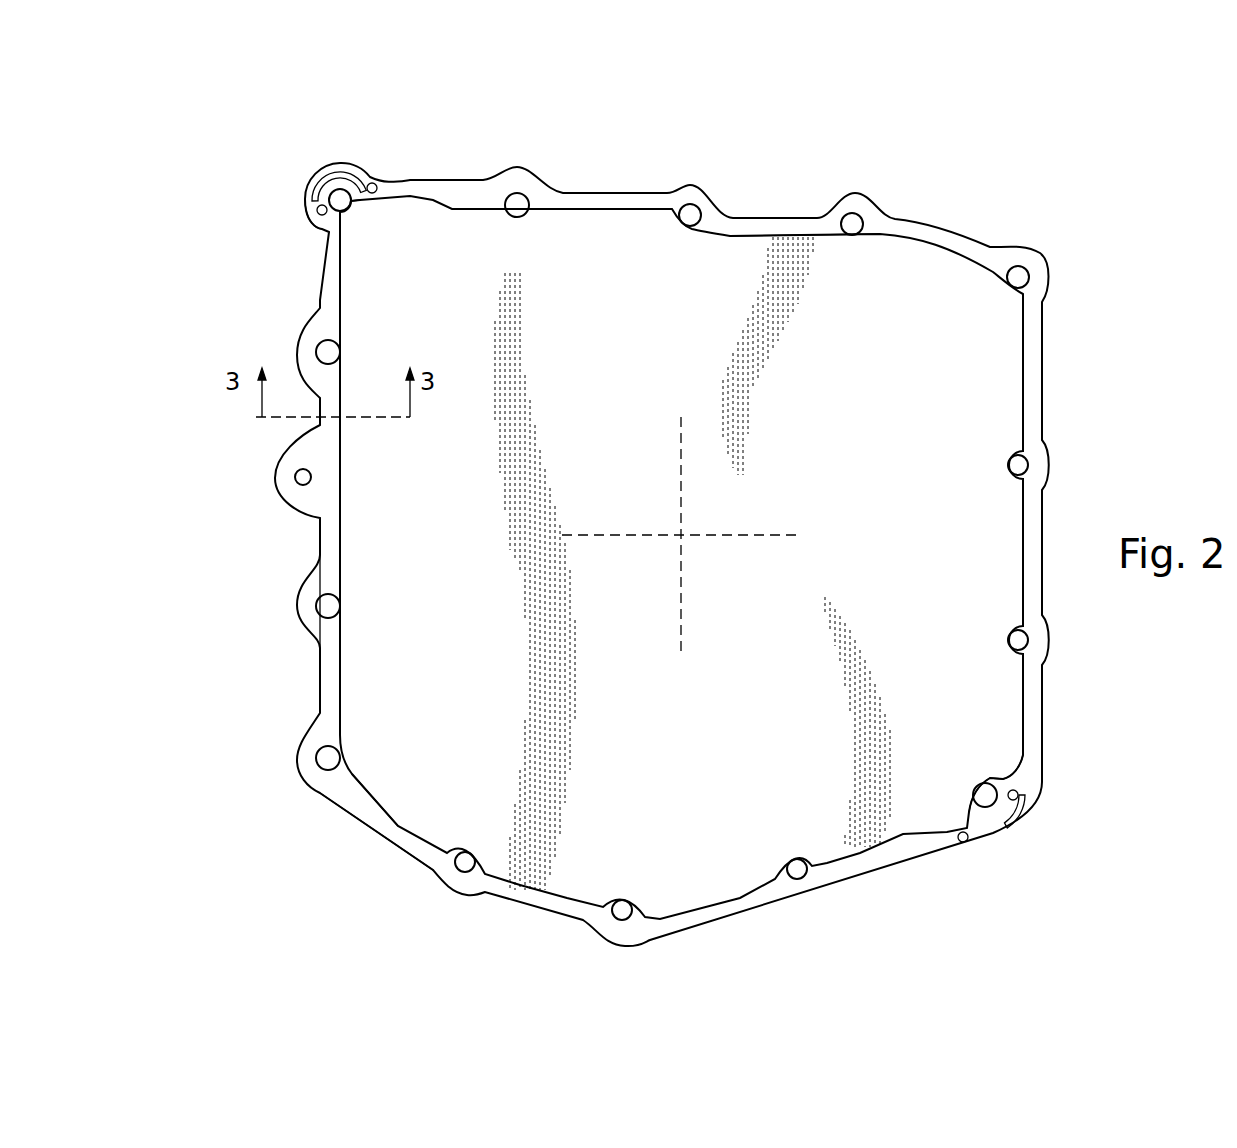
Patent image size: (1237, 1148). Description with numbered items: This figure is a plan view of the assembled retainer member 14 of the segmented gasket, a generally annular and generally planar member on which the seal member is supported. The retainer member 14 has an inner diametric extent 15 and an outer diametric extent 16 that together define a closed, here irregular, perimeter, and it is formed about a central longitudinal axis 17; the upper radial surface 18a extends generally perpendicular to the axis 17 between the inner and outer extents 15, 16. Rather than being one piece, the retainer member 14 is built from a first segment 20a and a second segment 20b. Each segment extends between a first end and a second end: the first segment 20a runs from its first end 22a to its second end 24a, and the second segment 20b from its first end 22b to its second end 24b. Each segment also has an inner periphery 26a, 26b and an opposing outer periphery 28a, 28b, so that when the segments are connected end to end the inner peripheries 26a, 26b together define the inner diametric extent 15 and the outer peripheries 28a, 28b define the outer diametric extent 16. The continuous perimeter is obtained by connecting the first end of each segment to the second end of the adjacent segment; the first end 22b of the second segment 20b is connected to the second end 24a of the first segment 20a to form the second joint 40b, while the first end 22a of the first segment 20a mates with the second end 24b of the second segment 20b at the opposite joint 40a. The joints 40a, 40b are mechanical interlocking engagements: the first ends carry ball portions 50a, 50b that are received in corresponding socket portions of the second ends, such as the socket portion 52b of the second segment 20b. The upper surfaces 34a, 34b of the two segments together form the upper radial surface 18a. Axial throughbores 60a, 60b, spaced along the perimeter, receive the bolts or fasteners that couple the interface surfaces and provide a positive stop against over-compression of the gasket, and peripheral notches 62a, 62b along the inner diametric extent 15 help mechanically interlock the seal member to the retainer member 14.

The retainer member 14 is at (1125, 178).
The inner diametric extent 15 is at (427, 807).
The outer diametric extent 16 is at (355, 852).
The central longitudinal axis 17 is at (681, 535).
The upper radial surface 18a is at (343, 706).
The first segment 20a is at (353, 935).
The second segment 20b is at (1125, 255).
The first end of first segment 22a is at (993, 842).
The first end of second segment 22b is at (306, 200).
The second end of first segment 24a is at (351, 212).
The second end of second segment 24b is at (975, 790).
The inner periphery of first segment 26a is at (343, 644).
The inner periphery of second segment 26b is at (751, 238).
The outer periphery of first segment 28a is at (322, 652).
The outer periphery of second segment 28b is at (758, 214).
The upper surface of first segment 34a is at (651, 930).
The upper surface of second segment 34b is at (882, 229).
The joint 40a is at (1042, 834).
The second joint 40b is at (290, 162).
The ball portion of first segment 50a is at (990, 787).
The ball portion of second segment 50b is at (328, 231).
The socket portion of second segment 52b is at (322, 198).
The axial throughbore of first segment 60a is at (340, 585).
The axial throughbore of second segment 60b is at (532, 187).
The peripheral notch of first segment 62a is at (342, 436).
The peripheral notch of second segment 62b is at (1023, 410).